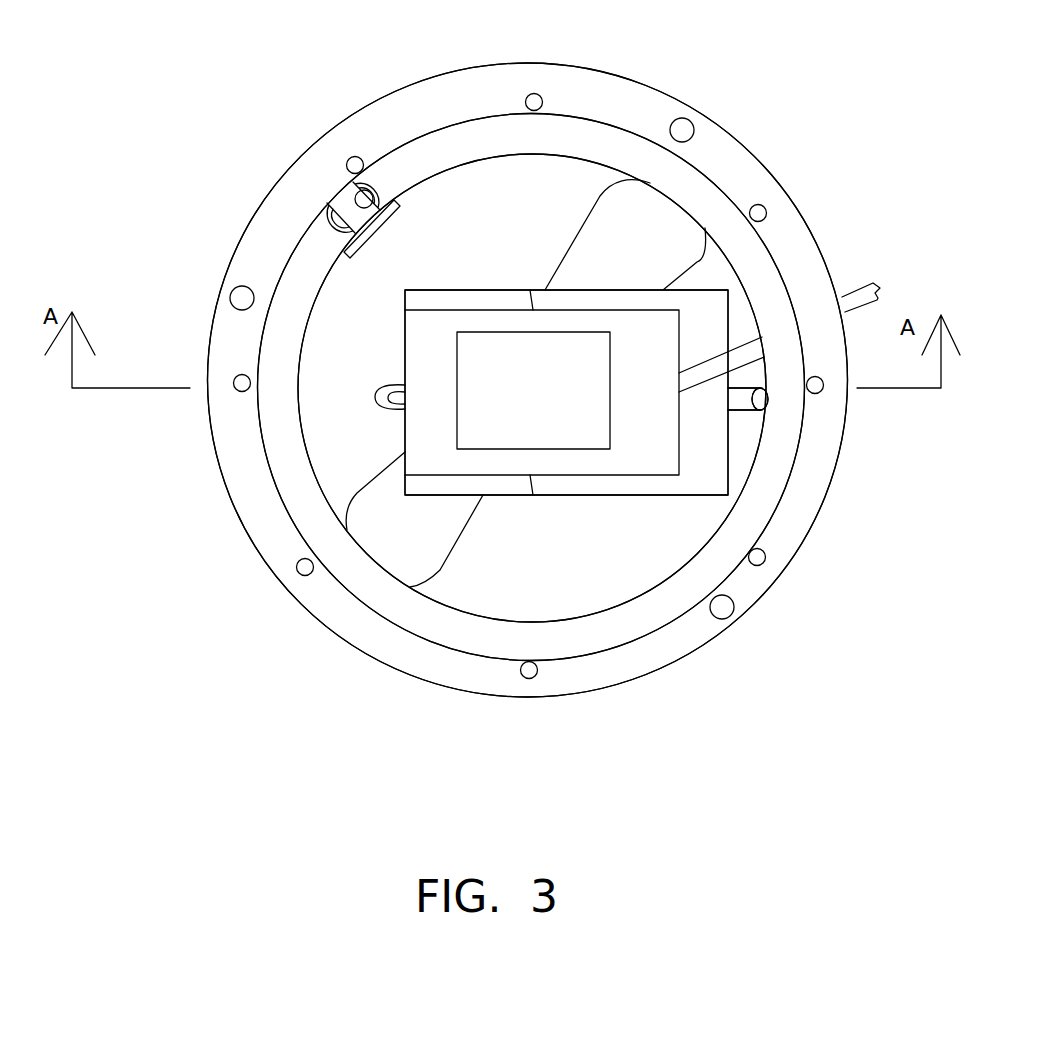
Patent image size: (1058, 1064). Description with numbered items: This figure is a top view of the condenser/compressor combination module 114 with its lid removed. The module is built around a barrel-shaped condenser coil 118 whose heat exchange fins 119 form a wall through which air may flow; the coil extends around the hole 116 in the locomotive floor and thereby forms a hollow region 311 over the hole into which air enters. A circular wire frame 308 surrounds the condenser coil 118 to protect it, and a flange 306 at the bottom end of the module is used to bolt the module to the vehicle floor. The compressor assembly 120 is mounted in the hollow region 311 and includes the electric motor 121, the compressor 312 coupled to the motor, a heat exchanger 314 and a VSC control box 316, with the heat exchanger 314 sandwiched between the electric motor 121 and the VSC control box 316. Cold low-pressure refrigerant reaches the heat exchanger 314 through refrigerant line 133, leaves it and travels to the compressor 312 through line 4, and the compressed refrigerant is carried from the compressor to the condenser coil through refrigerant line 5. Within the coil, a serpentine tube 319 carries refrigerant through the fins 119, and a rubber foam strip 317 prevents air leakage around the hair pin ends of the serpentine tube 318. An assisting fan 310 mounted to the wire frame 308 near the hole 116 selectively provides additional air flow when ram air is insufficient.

The refrigerant line 4 is at (396, 412).
The refrigerant line 5 is at (747, 410).
The condenser/compressor combination module 114 is at (287, 93).
The hole 116 is at (593, 592).
The condenser coil 118 is at (413, 143).
The heat exchange fins 119 is at (312, 260).
The compressor assembly 120 is at (405, 348).
The electric motor 121 is at (723, 350).
The refrigerant line 133 is at (848, 292).
The flange 306 is at (362, 625).
The wire frame 308 is at (530, 93).
The assisting fan 310 is at (440, 517).
The hollow region 311 is at (633, 560).
The compressor 312 is at (443, 300).
The heat exchanger 314 is at (542, 392).
The VSC control box 316 is at (533, 390).
The rubber foam strip 317 is at (380, 210).
The hair pin ends of the serpentine tube 318 is at (347, 190).
The serpentine tube 319 is at (377, 207).